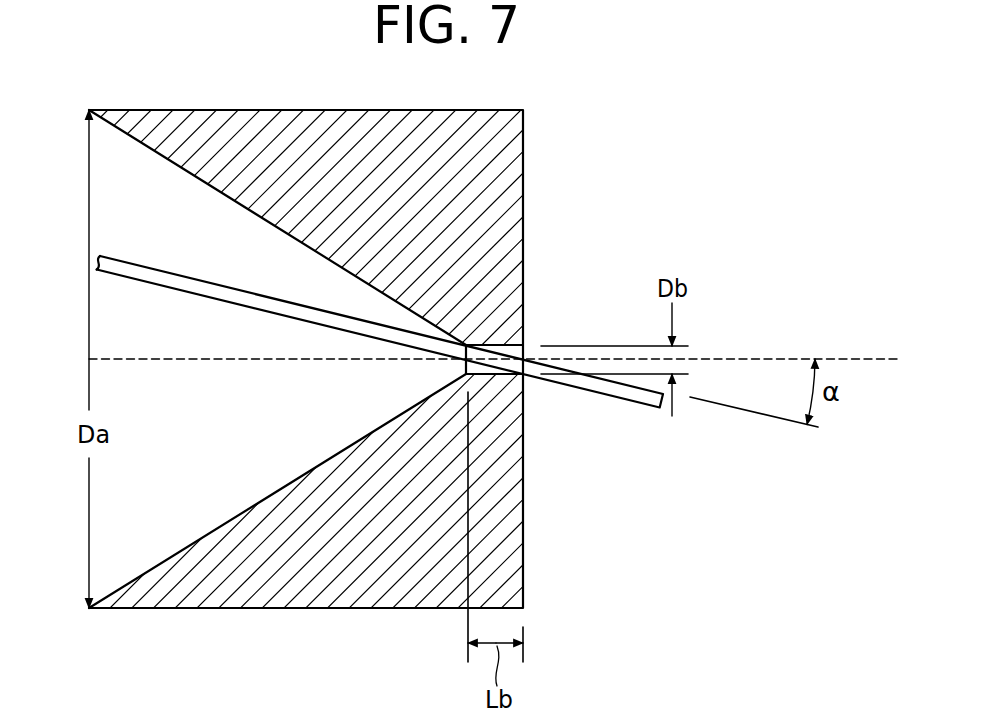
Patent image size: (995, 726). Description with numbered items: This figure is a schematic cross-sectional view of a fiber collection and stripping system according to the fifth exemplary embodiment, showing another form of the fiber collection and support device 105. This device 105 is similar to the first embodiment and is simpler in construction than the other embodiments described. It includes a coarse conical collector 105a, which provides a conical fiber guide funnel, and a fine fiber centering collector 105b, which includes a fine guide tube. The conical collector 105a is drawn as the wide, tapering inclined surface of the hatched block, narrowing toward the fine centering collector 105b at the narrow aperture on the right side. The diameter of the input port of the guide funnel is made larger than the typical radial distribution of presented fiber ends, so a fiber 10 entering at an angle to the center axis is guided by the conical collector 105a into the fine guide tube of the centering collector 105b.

The fiber collection and support device 105 is at (415, 110).
The coarse conical collector 105a is at (138, 138).
The fine fiber centering collector 105b is at (466, 314).
The light beam 10 is at (605, 396).